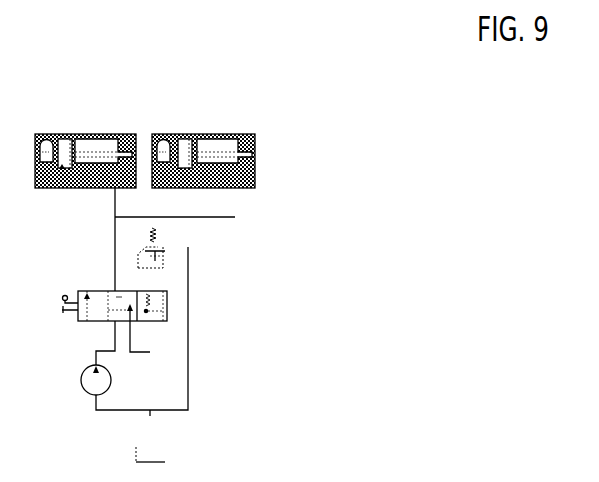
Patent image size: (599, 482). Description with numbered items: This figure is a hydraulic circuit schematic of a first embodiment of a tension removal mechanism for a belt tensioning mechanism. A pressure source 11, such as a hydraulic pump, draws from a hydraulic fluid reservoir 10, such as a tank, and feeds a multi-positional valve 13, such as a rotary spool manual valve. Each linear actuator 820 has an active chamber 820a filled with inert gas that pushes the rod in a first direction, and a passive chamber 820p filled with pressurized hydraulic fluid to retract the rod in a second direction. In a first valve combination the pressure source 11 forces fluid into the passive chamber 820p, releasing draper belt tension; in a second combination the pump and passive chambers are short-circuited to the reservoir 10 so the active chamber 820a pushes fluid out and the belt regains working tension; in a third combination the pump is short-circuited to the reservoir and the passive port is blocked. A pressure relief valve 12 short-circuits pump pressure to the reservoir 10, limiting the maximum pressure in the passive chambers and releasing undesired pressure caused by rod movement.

The linear actuator 820 is at (85, 135).
The active chamber 820a is at (184, 146).
The passive chamber 820p is at (212, 147).
The pressure relief valve 12 is at (168, 243).
The multi-positional valve 13 is at (80, 292).
The pressure source 11 is at (84, 373).
The hydraulic fluid reservoir 10 is at (156, 448).